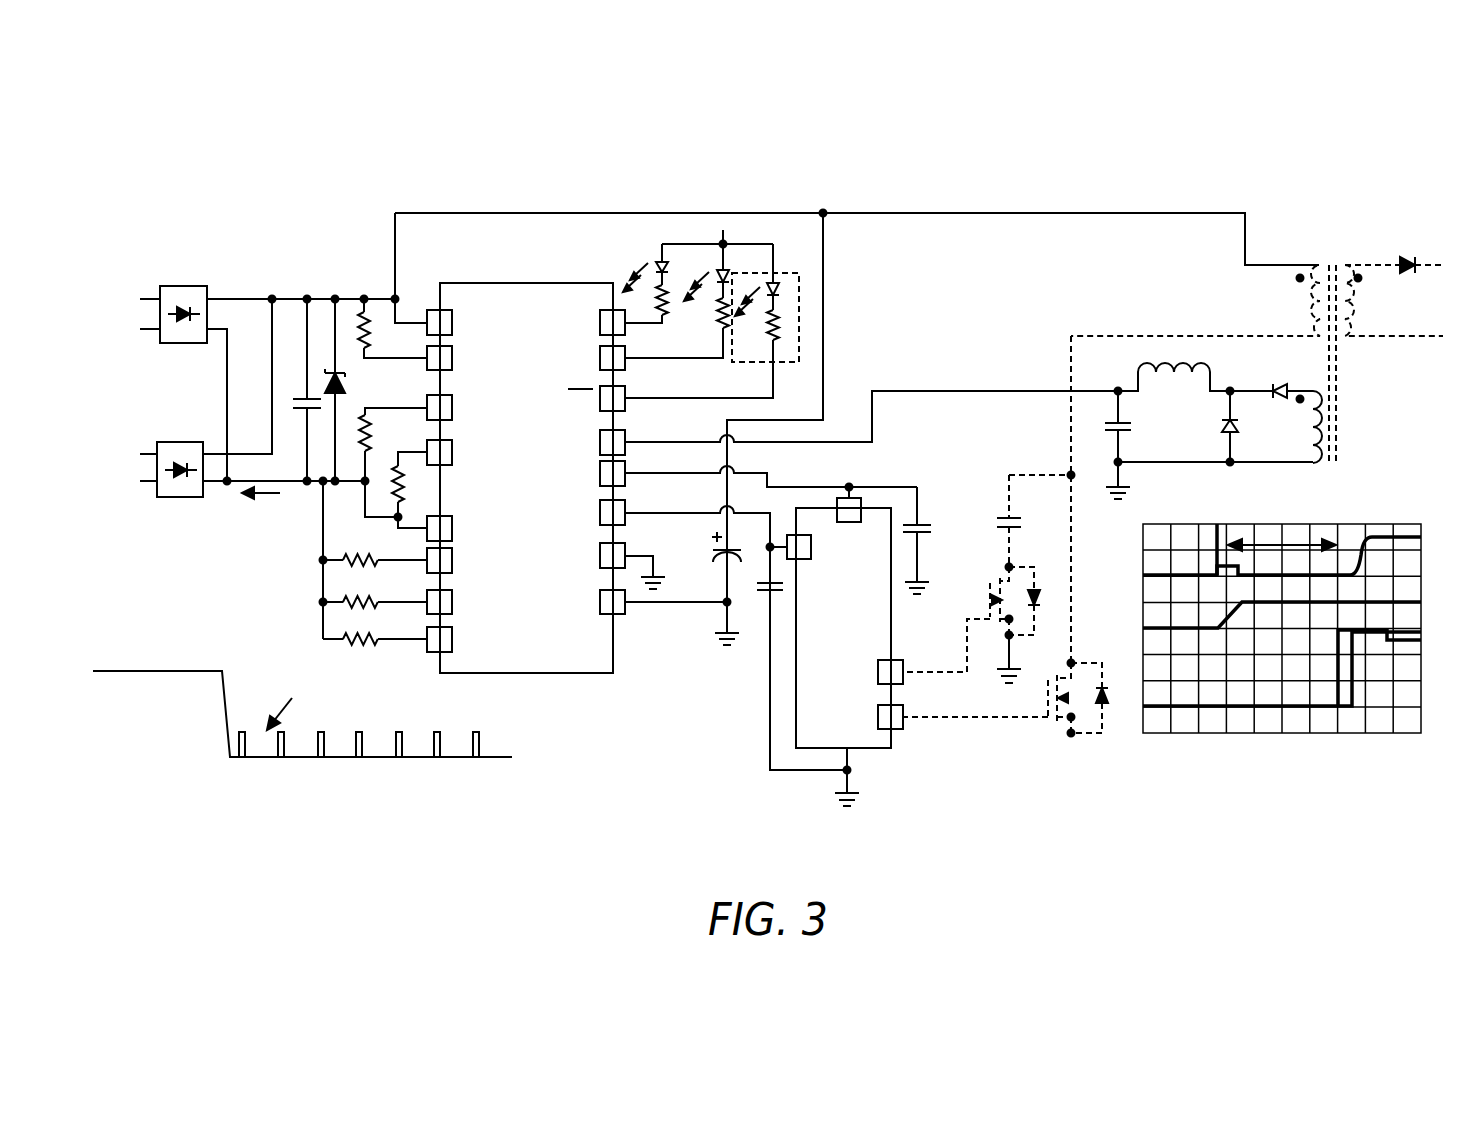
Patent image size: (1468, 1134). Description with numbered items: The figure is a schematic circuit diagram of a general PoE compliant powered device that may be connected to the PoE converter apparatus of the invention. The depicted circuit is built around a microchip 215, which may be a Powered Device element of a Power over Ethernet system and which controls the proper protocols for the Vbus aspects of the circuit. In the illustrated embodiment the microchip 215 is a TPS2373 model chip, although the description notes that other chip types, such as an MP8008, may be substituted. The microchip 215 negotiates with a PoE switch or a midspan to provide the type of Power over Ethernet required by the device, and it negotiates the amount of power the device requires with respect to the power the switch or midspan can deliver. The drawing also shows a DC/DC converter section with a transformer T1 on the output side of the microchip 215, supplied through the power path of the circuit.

The microchip 215 is at (1090, 156).
The PoE PD interface controller IC TPS2373 is at (526, 465).
The DC/DC converter transformer T1 is at (1257, 347).